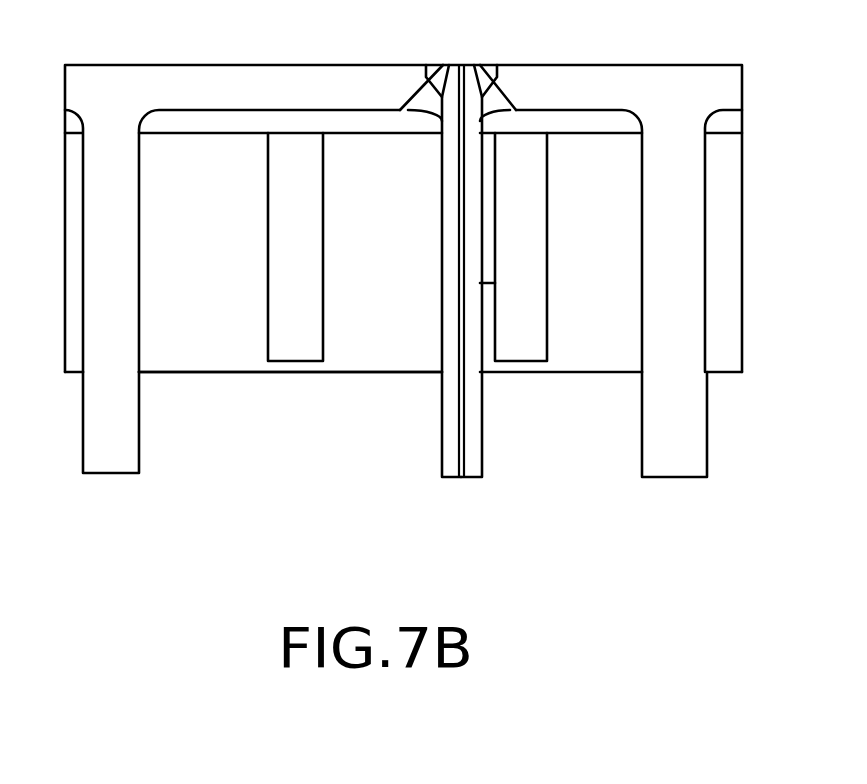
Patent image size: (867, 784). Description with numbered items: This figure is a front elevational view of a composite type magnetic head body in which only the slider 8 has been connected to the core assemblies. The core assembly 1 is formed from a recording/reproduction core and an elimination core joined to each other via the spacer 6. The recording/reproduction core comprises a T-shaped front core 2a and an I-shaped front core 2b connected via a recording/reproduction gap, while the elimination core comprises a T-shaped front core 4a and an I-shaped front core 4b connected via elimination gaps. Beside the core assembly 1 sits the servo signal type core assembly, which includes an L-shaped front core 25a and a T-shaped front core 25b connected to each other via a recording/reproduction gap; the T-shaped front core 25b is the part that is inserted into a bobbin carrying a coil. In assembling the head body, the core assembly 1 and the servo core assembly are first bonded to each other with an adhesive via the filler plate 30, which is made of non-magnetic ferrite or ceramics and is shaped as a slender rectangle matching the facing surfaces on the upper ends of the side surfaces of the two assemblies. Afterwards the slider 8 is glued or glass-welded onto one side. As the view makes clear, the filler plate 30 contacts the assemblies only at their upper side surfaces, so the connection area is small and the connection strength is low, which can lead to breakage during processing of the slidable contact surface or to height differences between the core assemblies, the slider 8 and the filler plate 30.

The core assembly 1 is at (655, 65).
The T-shaped front core 2a is at (693, 435).
The I-shaped front core 2b is at (473, 467).
The T-shaped front core 4a is at (105, 457).
The I-shaped front core 4b is at (448, 468).
The spacer 6 is at (462, 470).
The slider 8 is at (185, 360).
The L-shaped front core 25a is at (532, 350).
The T-shaped front core 25b is at (310, 352).
The filler plate 30 is at (610, 122).